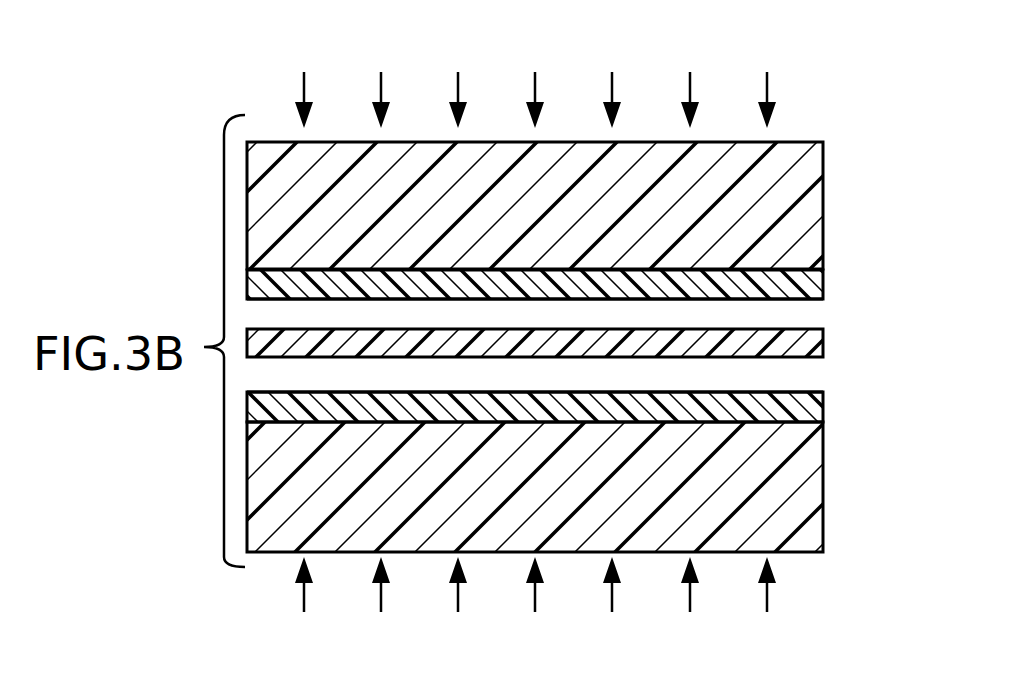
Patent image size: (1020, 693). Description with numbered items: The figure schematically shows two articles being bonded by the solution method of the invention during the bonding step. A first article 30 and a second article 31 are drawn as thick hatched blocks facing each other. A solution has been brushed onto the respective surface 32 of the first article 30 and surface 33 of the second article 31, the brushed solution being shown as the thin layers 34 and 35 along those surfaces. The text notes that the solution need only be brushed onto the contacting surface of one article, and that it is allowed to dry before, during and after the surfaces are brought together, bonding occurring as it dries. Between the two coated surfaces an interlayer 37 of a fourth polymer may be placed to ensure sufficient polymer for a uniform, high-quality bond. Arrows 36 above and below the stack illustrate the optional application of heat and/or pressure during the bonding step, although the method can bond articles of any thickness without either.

The first article 30 is at (823, 203).
The second article 31 is at (823, 505).
The surface 32 is at (823, 273).
The surface 33 is at (823, 420).
The brushed solution 34 is at (812, 300).
The brushed solution 35 is at (812, 392).
The arrows 36 is at (458, 72).
The intermediate film 37 is at (823, 347).